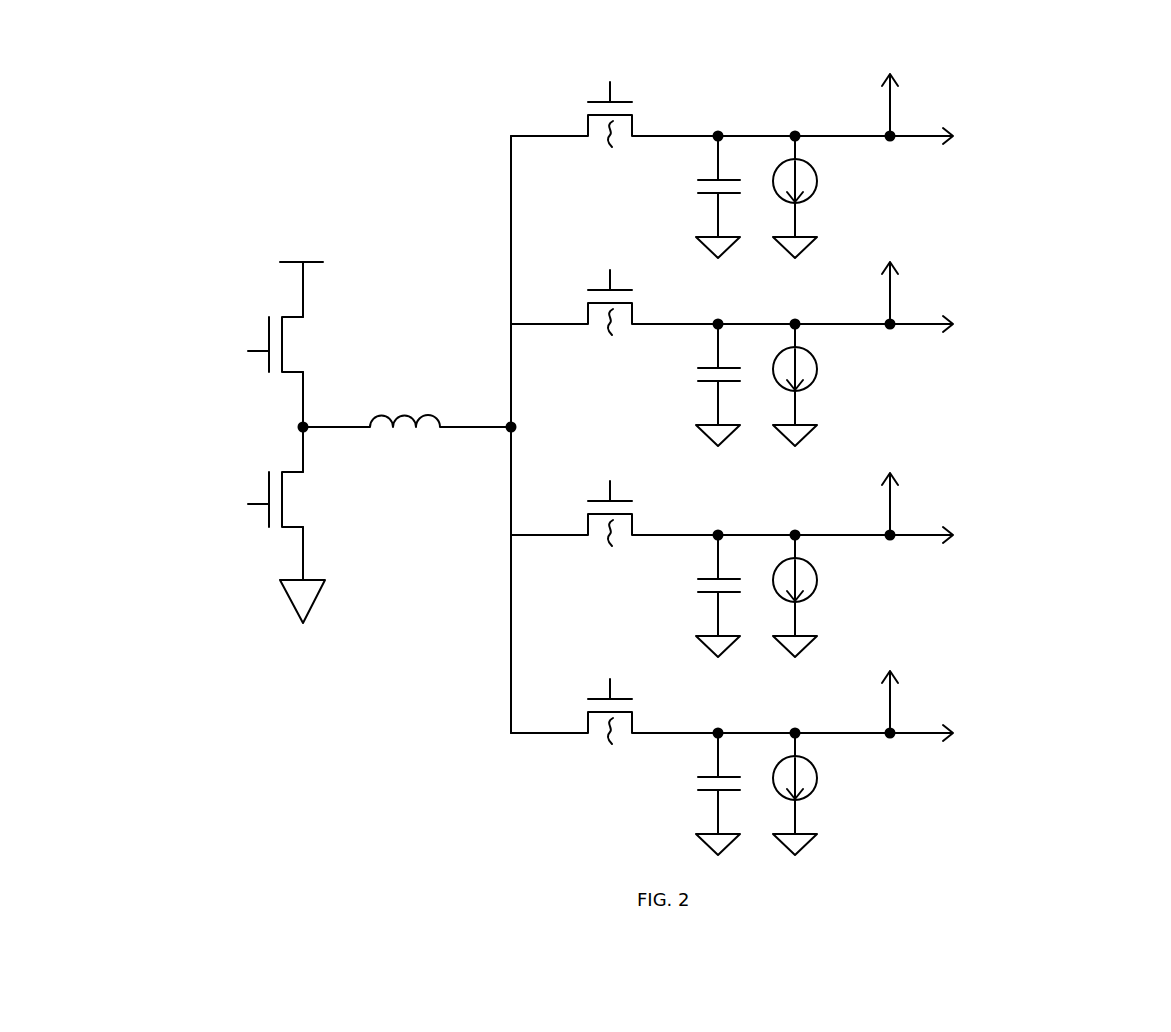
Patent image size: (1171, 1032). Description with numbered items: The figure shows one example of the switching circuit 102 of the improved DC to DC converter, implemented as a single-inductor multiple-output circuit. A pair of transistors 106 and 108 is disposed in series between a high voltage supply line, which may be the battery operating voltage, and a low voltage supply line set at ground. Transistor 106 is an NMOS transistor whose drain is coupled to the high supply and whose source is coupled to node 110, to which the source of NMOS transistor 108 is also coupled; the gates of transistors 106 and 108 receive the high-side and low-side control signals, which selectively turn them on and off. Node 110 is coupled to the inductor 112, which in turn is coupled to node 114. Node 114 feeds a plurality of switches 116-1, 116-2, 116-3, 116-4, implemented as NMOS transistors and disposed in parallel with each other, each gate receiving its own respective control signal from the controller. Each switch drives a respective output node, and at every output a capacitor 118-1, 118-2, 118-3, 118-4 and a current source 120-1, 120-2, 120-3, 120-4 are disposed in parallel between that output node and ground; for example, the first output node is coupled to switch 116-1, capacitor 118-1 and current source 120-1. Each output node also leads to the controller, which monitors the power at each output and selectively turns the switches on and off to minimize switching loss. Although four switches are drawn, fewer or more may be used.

The switching circuit 102 is at (1098, 171).
The transistor 106 is at (302, 348).
The transistor 108 is at (302, 496).
The node 110 is at (299, 427).
The inductor 112 is at (406, 414).
The node 114 is at (506, 433).
The switch 116-1 is at (614, 131).
The switch 116-2 is at (614, 319).
The switch 116-3 is at (614, 530).
The switch 116-4 is at (614, 728).
The capacitor 118-1 is at (696, 185).
The capacitor 118-2 is at (674, 383).
The capacitor 118-3 is at (674, 594).
The capacitor 118-4 is at (674, 792).
The current source 120-1 is at (818, 181).
The current source 120-2 is at (810, 383).
The current source 120-3 is at (810, 594).
The current source 120-4 is at (810, 792).